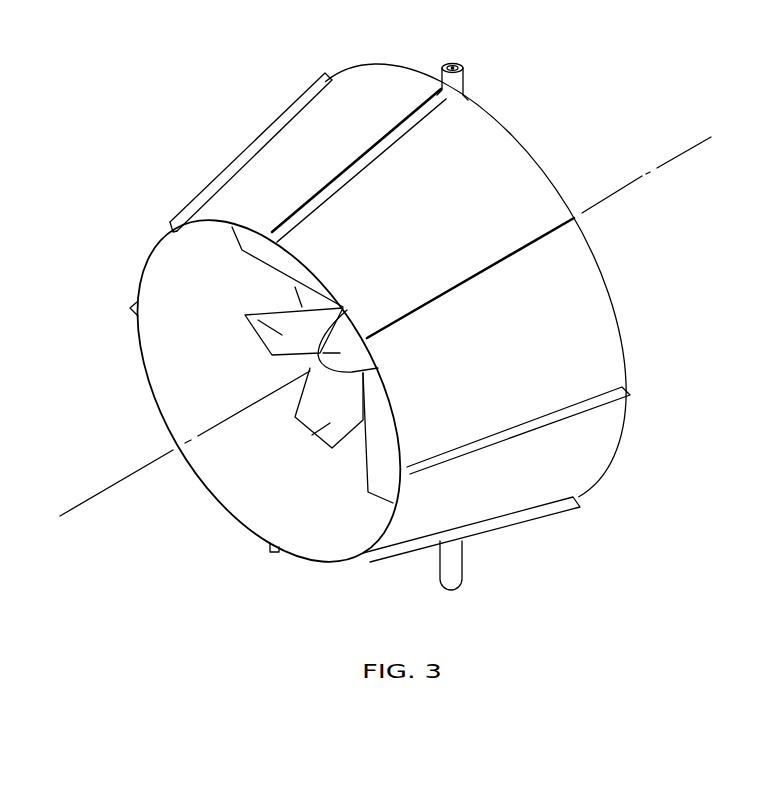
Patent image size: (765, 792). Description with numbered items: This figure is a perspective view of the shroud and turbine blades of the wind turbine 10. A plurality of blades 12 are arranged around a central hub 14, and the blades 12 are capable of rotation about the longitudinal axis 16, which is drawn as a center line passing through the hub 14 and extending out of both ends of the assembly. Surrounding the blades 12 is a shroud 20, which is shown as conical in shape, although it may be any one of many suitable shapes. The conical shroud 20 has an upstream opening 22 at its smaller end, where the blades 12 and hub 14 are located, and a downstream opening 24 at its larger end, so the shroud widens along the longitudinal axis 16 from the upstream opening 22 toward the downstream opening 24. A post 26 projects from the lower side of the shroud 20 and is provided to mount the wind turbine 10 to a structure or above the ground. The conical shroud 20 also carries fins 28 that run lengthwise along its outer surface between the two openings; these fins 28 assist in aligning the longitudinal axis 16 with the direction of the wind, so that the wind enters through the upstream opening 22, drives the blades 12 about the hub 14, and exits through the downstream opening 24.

The wind turbine 10 is at (237, 132).
The blades 12 is at (298, 312).
The hub 14 is at (272, 356).
The longitudinal axis 16 is at (148, 463).
The shroud 20 is at (353, 108).
The upstream opening 22 is at (185, 355).
The downstream opening 24 is at (548, 133).
The post 26 is at (450, 576).
The fins 28 is at (210, 193).